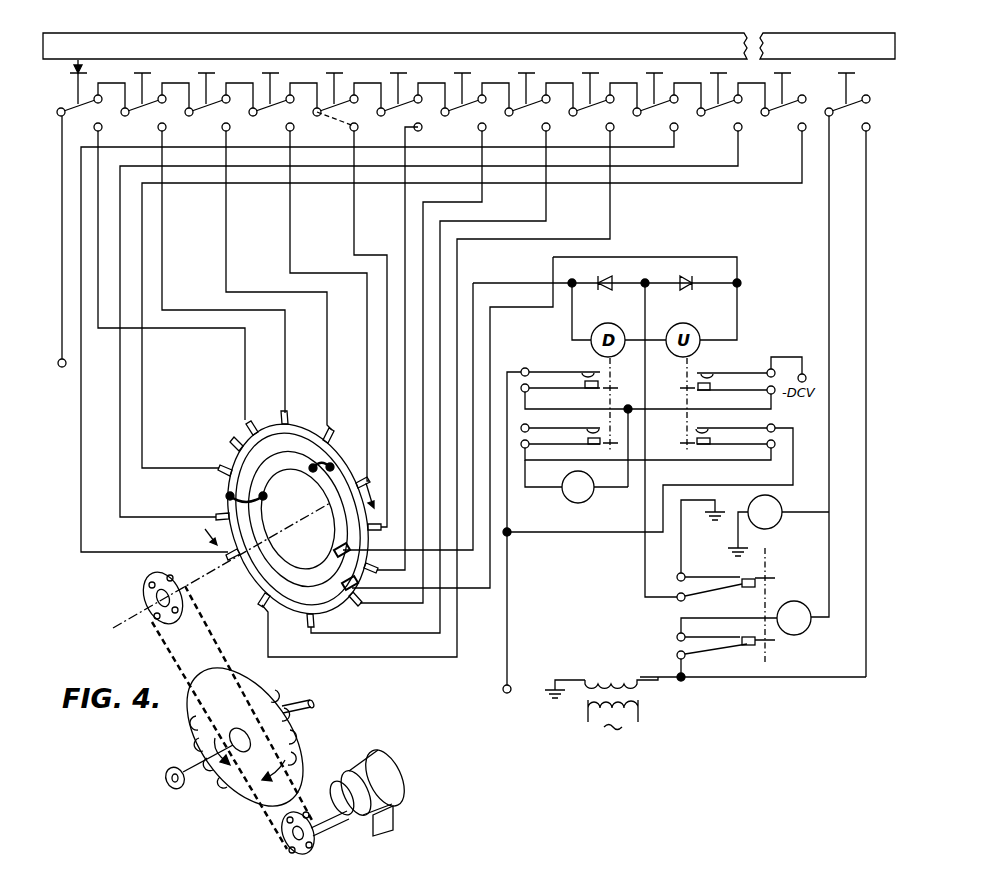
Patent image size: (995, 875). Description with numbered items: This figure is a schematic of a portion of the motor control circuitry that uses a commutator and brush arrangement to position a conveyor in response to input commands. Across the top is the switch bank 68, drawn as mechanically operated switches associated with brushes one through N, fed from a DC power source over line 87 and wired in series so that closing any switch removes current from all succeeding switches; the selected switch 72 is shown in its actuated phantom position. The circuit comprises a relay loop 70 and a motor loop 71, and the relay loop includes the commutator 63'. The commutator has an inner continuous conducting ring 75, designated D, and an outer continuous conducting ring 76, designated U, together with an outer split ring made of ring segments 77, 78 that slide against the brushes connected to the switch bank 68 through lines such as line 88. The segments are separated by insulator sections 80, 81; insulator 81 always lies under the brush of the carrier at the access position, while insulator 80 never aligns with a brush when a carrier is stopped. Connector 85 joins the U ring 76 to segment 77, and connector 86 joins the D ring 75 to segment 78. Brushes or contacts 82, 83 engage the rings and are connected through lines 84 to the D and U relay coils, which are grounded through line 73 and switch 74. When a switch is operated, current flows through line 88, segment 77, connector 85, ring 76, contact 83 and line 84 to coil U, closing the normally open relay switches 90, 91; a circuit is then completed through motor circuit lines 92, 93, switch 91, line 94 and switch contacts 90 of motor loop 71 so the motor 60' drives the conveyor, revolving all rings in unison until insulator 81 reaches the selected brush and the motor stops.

The switch bank 68 is at (129, 31).
The selected switch 72 is at (352, 100).
The line 87 is at (61, 242).
The line 88 is at (355, 238).
The lines 84 is at (526, 307).
The commutator 63' is at (293, 519).
The insulator section 80 is at (229, 444).
The connector 86 is at (228, 497).
The connector 85 is at (314, 461).
The ring segment 77 is at (358, 480).
The inner ring 75 is at (331, 527).
The brush 82 is at (333, 566).
The brush 83 is at (366, 577).
The outer ring 76 is at (296, 604).
The insulator section 81 is at (346, 607).
The ring segment 78 is at (253, 577).
The relay loop 70 is at (645, 378).
The relay switch 90 is at (713, 381).
The line 94 is at (663, 407).
The relay switch 91 is at (688, 431).
The motor 60' is at (592, 491).
The motor loop 71 is at (568, 525).
The motor circuit line 93 is at (598, 533).
The line 73 is at (645, 577).
The switch 74 is at (730, 581).
The motor circuit line 92 is at (509, 606).